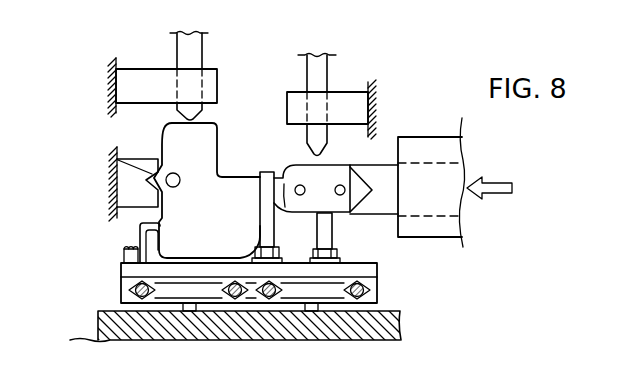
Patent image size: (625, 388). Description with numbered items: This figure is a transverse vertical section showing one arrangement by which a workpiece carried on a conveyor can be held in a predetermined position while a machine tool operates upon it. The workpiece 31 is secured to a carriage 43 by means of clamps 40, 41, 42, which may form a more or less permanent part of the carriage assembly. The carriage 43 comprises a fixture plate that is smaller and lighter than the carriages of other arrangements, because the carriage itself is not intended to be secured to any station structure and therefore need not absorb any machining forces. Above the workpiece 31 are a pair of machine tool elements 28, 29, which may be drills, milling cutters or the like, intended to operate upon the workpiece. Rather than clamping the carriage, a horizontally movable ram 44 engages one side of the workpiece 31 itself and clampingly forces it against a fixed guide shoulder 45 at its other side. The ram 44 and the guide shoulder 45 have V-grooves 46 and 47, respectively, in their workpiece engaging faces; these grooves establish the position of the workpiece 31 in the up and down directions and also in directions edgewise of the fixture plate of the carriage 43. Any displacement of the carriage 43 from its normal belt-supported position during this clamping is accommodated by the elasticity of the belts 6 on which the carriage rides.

The belts 6 is at (235, 303).
The machine tool element 28 is at (187, 52).
The machine tool element 29 is at (318, 73).
The workpiece 31 is at (204, 220).
The clamp 40 is at (140, 236).
The clamp 41 is at (268, 190).
The clamp 42 is at (328, 235).
The carriage 43 is at (120, 270).
The horizontally movable ram 44 is at (428, 163).
The fixed guide shoulder 45 is at (147, 185).
The V-groove 46 is at (360, 188).
The V-groove 47 is at (117, 159).